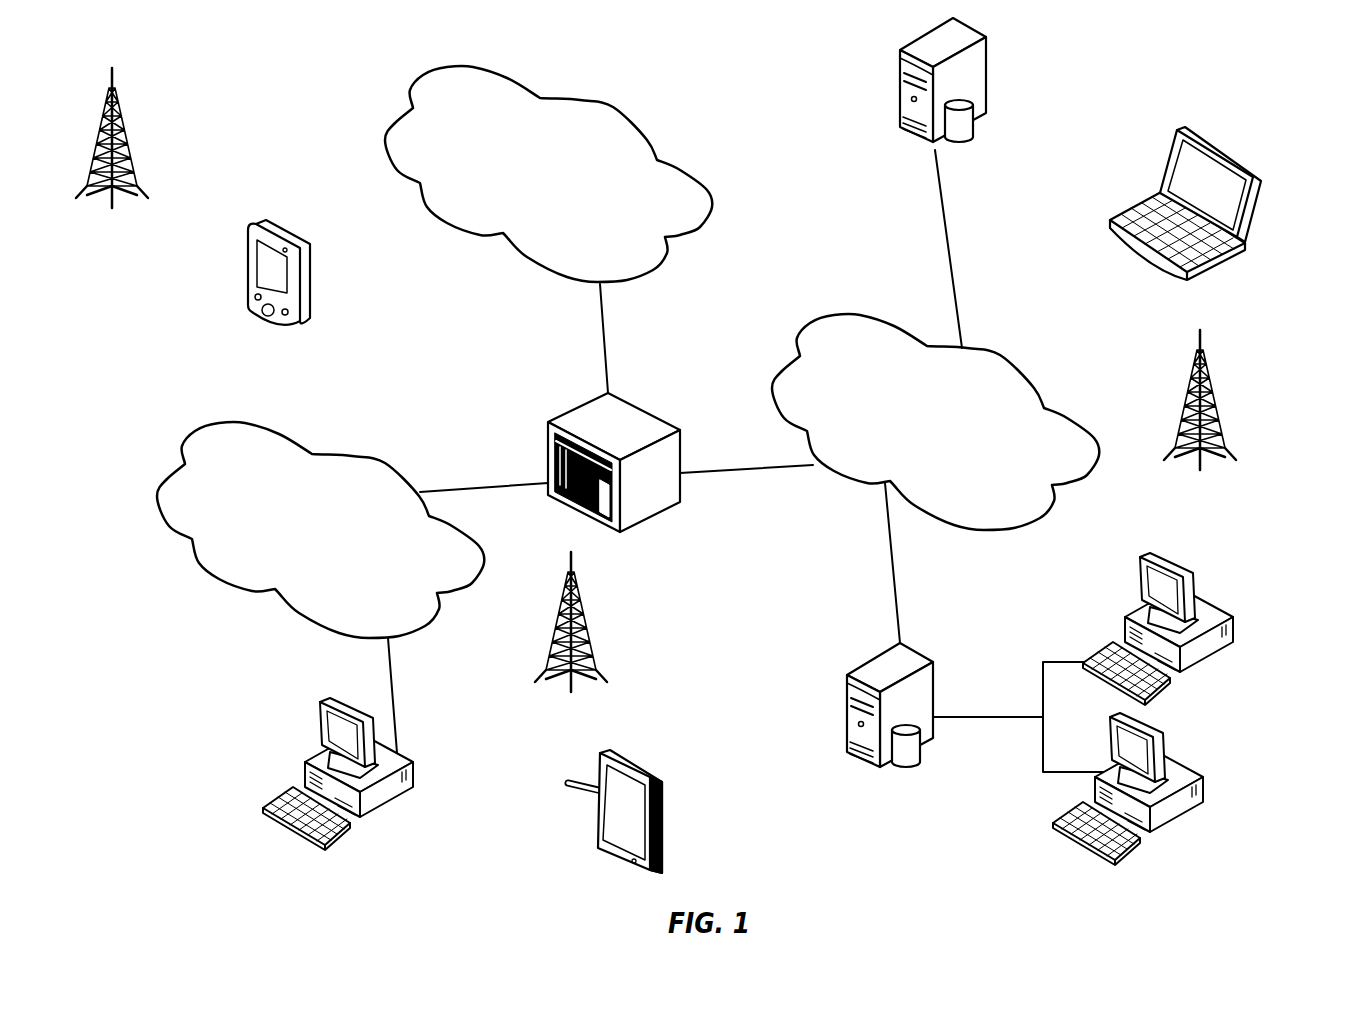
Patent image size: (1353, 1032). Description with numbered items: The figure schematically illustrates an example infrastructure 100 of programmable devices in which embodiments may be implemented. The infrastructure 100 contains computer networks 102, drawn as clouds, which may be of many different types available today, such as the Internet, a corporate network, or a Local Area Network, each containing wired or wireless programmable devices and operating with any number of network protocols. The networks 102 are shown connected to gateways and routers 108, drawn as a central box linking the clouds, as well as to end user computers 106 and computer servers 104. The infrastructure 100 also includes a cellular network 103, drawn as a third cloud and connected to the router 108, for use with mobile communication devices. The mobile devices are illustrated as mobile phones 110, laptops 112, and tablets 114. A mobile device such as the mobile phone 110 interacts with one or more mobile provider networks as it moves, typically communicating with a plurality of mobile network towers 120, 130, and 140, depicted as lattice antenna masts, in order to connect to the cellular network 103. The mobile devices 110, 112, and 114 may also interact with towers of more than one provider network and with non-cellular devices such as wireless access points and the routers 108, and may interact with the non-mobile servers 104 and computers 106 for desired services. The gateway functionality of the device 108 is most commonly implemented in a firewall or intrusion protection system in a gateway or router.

The infrastructure 100 is at (1092, 115).
The computer networks 102 is at (300, 442).
The cellular network 103 is at (597, 103).
The computer servers 104 is at (847, 693).
The end user computers 106 is at (413, 765).
The gateways and routers 108 is at (640, 405).
The mobile phones 110 is at (287, 225).
The laptops 112 is at (1230, 158).
The tablets 114 is at (642, 762).
The mobile network tower 120 is at (571, 639).
The mobile network tower 130 is at (1200, 417).
The mobile network tower 140 is at (112, 155).